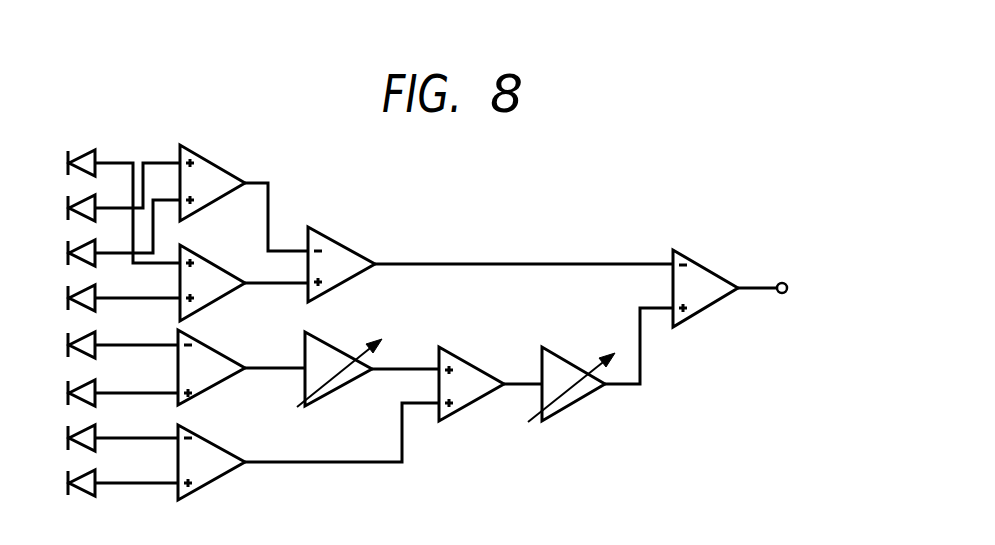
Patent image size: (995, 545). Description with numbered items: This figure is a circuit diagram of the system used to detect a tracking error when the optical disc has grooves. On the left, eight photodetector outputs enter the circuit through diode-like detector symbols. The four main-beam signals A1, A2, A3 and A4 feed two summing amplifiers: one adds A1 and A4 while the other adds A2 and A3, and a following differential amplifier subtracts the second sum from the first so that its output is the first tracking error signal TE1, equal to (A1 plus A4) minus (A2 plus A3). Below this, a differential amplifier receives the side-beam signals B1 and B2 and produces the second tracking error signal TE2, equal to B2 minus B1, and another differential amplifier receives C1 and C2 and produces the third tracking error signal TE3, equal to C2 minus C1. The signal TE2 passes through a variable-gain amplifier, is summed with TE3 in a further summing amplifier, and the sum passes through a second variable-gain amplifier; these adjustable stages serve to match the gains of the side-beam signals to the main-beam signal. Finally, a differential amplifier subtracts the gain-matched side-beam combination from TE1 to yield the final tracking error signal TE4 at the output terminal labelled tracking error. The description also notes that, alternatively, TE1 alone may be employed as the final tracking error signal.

The detector signal A1 is at (124, 200).
The detector signal A2 is at (124, 192).
The detector signal A3 is at (124, 233).
The detector signal A4 is at (124, 292).
The detector signal B1 is at (123, 339).
The detector signal B2 is at (123, 387).
The detector signal C1 is at (123, 432).
The detector signal C2 is at (123, 477).
The tracking error signal TE1 is at (421, 264).
The tracking error signal TE2 is at (268, 367).
The tracking error signal TE3 is at (297, 462).
The final tracking error signal TE4 is at (801, 276).